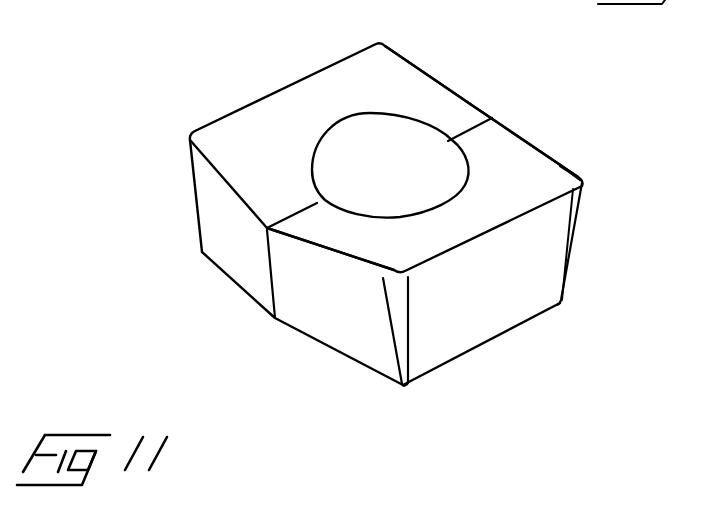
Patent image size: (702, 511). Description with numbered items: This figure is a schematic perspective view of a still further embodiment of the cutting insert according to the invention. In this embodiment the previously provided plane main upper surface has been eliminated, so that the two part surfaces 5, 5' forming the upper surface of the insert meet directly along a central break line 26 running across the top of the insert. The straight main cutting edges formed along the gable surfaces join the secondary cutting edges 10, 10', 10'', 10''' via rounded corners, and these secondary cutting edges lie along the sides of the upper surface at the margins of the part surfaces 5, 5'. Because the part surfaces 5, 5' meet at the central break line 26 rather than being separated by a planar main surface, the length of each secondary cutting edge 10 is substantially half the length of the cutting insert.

The secondary cutting edge 10 is at (386, 214).
The secondary cutting edge 10' is at (427, 58).
The secondary cutting edge 10'' is at (531, 126).
The secondary cutting edge 10''' is at (358, 249).
The part surface 5 is at (465, 95).
The part surface 5' is at (567, 149).
The central break line 26 is at (295, 218).